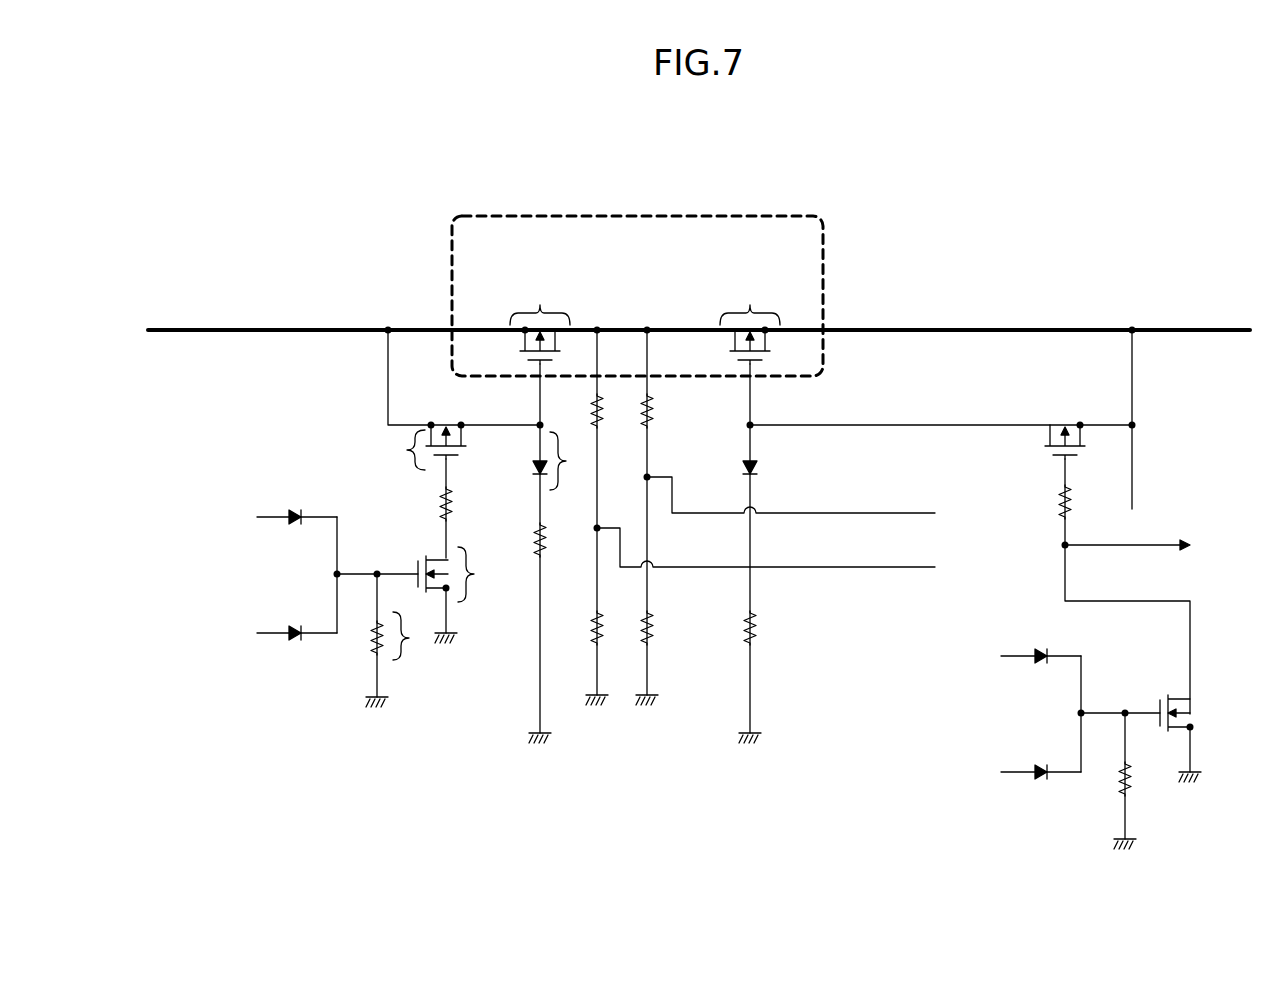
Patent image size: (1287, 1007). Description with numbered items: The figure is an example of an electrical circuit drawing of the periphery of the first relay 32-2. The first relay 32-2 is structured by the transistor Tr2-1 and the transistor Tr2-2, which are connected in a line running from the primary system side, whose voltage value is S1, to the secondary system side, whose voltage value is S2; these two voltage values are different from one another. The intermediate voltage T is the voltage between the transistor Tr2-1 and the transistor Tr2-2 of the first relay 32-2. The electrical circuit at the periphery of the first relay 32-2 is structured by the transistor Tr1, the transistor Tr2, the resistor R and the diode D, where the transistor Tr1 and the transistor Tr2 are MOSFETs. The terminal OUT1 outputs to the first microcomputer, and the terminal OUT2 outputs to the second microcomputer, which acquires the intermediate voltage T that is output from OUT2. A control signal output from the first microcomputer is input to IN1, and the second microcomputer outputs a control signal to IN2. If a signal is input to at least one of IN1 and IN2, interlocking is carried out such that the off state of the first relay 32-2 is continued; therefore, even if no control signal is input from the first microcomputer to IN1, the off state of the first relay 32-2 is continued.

The first relay 32-2 is at (737, 215).
The voltage value of the primary system side S1 is at (257, 328).
The voltage value of the secondary system side S2 is at (978, 328).
The intermediate voltage T is at (677, 328).
The transistor Tr2-1 is at (541, 302).
The transistor Tr2-2 is at (758, 298).
The transistor Tr2 is at (398, 446).
The transistor Tr1 is at (482, 570).
The resistor R is at (416, 634).
The diode D is at (571, 457).
The input terminal IN1 is at (271, 515).
The input terminal IN2 is at (271, 631).
The output terminal OUT1 is at (949, 516).
The output terminal OUT2 is at (766, 547).